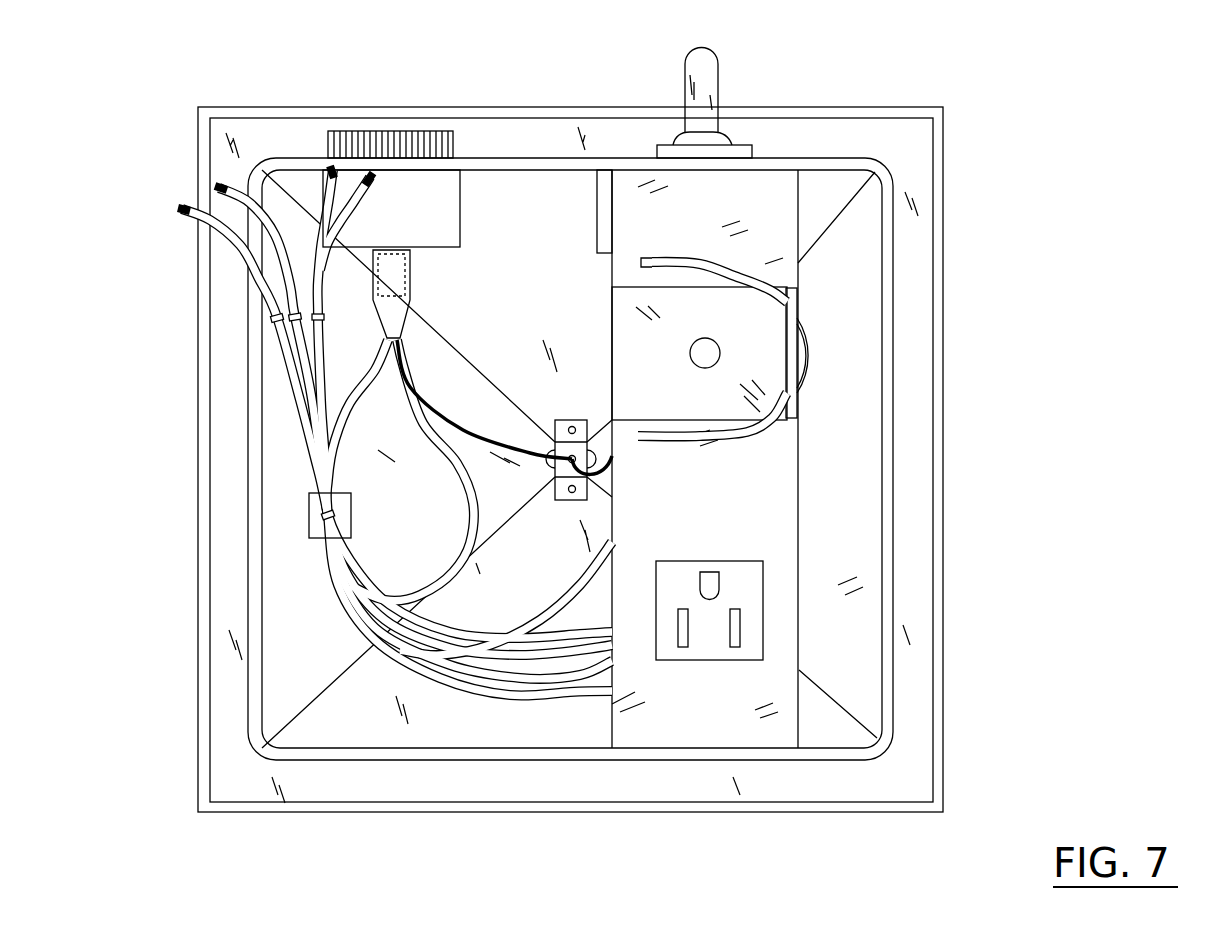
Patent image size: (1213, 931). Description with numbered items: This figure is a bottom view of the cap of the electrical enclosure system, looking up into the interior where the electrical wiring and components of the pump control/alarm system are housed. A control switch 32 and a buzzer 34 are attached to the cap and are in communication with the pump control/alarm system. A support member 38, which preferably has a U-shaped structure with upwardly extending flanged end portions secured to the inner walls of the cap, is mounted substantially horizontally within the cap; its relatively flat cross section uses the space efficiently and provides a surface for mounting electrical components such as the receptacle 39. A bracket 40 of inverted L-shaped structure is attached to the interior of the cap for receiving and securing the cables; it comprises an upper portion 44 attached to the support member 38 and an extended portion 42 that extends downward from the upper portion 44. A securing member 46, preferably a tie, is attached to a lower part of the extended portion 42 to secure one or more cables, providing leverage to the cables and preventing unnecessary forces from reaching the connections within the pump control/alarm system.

The control switch 32 is at (713, 80).
The buzzer 34 is at (378, 135).
The support member 38 is at (787, 263).
The receptacle 39 is at (752, 640).
The bracket 40 is at (800, 398).
The extended portion 42 is at (793, 298).
The upper portion 44 is at (718, 405).
The securing member 46 is at (810, 350).